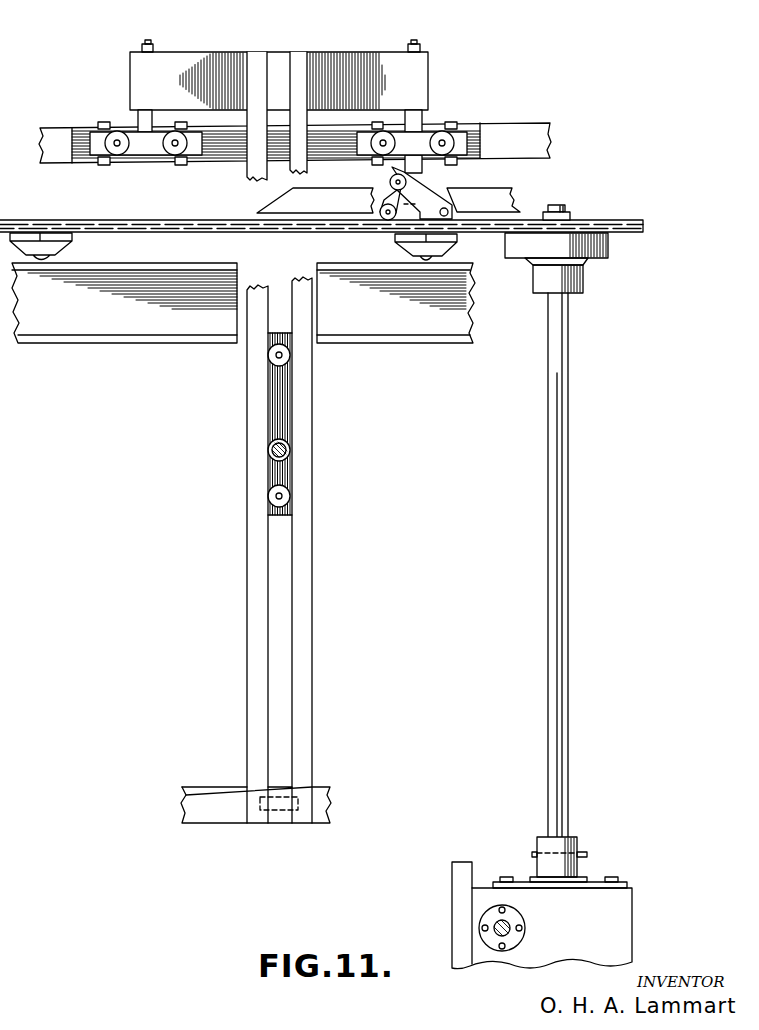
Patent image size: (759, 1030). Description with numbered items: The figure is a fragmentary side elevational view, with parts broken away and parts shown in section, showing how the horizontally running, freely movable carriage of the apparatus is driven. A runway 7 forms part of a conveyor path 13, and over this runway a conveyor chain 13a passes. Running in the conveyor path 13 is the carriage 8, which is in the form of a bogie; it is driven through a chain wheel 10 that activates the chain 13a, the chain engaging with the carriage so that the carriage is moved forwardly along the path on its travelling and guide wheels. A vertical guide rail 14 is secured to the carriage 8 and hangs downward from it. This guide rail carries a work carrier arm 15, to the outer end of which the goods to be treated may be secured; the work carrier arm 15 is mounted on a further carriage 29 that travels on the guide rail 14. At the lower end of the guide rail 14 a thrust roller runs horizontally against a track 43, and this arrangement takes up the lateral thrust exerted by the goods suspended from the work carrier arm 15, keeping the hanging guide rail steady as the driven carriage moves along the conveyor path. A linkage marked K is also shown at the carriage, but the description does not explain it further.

The vertical guide rail 14 is at (258, 57).
The carriage 8 is at (342, 53).
The conveyor path 13 is at (60, 137).
The conveyor chain 13a is at (125, 221).
The clamping linkage K is at (425, 187).
The runway 7 is at (343, 273).
The chain wheel 10 is at (528, 245).
The carriage 29 is at (280, 417).
The work carrier arm 15 is at (292, 450).
The track 43 is at (235, 813).